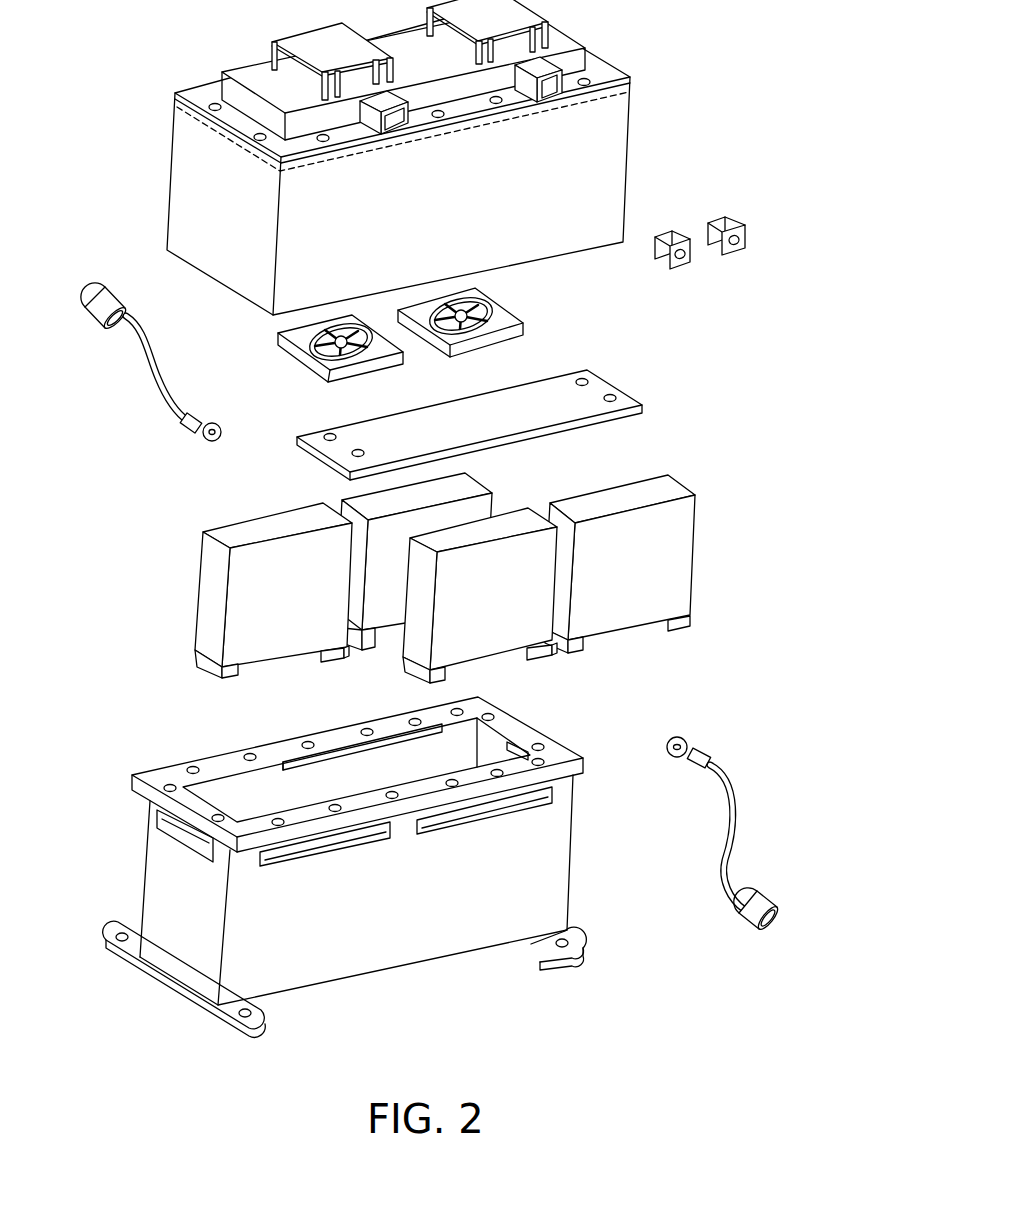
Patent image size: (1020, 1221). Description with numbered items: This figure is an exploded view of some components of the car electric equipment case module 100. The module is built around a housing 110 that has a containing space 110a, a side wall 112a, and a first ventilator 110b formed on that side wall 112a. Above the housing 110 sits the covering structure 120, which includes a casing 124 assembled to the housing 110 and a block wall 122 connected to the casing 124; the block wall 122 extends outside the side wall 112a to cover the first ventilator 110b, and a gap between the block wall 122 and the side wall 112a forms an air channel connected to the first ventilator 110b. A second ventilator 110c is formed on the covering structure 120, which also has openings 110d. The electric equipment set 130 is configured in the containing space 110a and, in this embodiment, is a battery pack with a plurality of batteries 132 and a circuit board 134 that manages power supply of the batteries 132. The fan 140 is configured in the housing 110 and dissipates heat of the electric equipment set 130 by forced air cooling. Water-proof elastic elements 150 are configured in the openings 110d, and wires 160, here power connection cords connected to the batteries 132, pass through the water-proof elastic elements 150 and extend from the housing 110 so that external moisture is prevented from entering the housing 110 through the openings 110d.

The car electric equipment case module 100 is at (773, 1065).
The housing 110 is at (334, 873).
The containing space 110a is at (276, 801).
The first ventilator 110b is at (290, 860).
The second ventilator 110c is at (540, 36).
The openings 110d is at (400, 126).
The side wall 112a is at (424, 905).
The covering structure 120 is at (346, 158).
The block wall 122 is at (200, 229).
The casing 124 is at (203, 97).
The electric equipment set 130 is at (390, 579).
The batteries 132 is at (208, 638).
The circuit board 134 is at (337, 448).
The fan 140 is at (308, 360).
The water-proof elastic elements 150 is at (718, 222).
The wires 160 is at (160, 408).